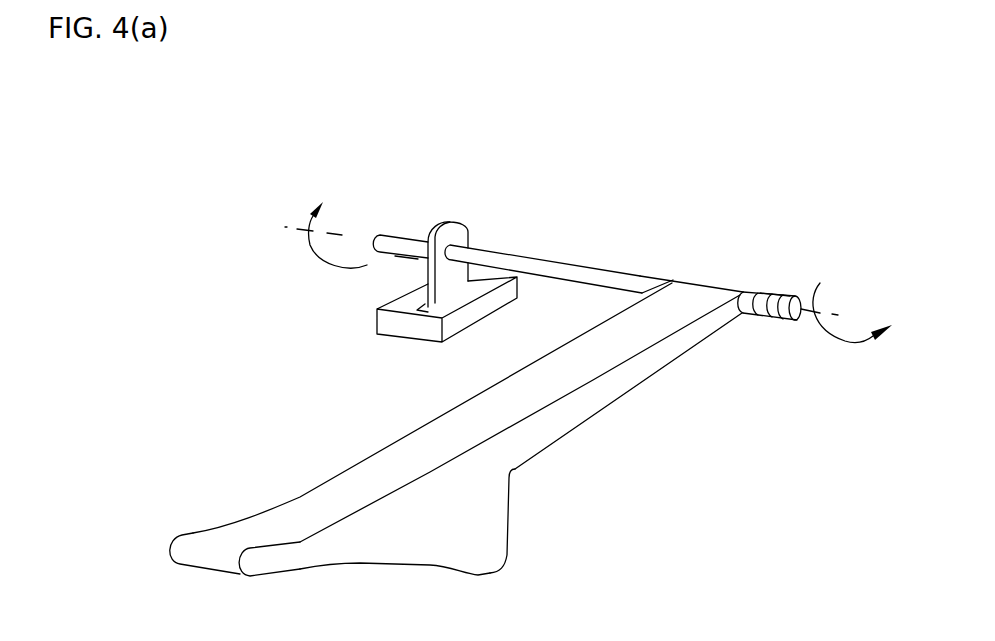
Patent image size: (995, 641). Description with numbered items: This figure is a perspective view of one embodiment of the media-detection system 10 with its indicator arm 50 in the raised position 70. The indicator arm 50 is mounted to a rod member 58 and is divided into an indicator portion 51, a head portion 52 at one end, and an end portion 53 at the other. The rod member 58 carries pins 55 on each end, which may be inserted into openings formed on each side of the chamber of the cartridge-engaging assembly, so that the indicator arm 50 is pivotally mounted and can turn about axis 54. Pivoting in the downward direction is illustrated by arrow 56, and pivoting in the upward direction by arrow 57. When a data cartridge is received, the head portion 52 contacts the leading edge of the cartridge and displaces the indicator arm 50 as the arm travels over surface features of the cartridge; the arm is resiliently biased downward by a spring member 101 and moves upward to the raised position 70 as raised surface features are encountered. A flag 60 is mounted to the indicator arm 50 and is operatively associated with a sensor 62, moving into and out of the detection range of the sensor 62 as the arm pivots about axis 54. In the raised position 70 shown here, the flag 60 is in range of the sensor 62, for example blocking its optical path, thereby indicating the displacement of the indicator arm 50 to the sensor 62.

The media-detection system 10 is at (231, 192).
The indicator arm 50 is at (590, 410).
The indicator portion 51 is at (490, 573).
The head portion 52 is at (210, 573).
The end portion 53 is at (704, 282).
The axis 54 is at (352, 231).
The pins 55 is at (407, 261).
The arrow 56 is at (848, 342).
The arrow 57 is at (316, 263).
The rod member 58 is at (557, 258).
The flag 60 is at (449, 222).
The sensor 62 is at (465, 318).
The raised position 70 is at (332, 445).
The spring member 101 is at (780, 316).